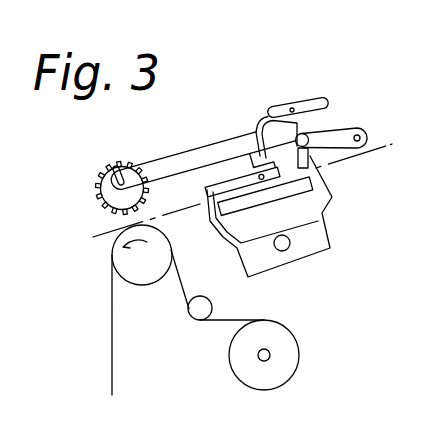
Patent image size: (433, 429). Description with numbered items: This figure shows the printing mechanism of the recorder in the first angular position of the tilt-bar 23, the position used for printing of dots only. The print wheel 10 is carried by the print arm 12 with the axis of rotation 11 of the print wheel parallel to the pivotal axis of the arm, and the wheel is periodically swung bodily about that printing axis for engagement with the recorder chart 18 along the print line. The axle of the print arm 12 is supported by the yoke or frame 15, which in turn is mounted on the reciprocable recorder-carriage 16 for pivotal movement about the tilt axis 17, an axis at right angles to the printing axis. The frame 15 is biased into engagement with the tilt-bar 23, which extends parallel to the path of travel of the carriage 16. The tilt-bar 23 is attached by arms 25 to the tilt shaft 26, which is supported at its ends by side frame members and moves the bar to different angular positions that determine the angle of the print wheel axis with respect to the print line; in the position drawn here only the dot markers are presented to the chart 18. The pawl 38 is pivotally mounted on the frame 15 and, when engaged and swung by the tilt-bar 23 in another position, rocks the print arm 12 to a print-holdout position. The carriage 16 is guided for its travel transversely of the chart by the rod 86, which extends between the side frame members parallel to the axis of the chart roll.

The print wheel 10 is at (99, 181).
The axis of rotation 11 is at (123, 172).
The print arm 12 is at (177, 160).
The pawl 38 is at (281, 108).
The tilt-bar 23 is at (306, 137).
The arms 25 is at (352, 126).
The tilt shaft 26 is at (368, 135).
The tilt axis 17 is at (378, 151).
The recorder-carriage 16 is at (324, 231).
The yoke or frame 15 is at (214, 193).
The rod 86 is at (288, 249).
The recorder chart 18 is at (110, 311).